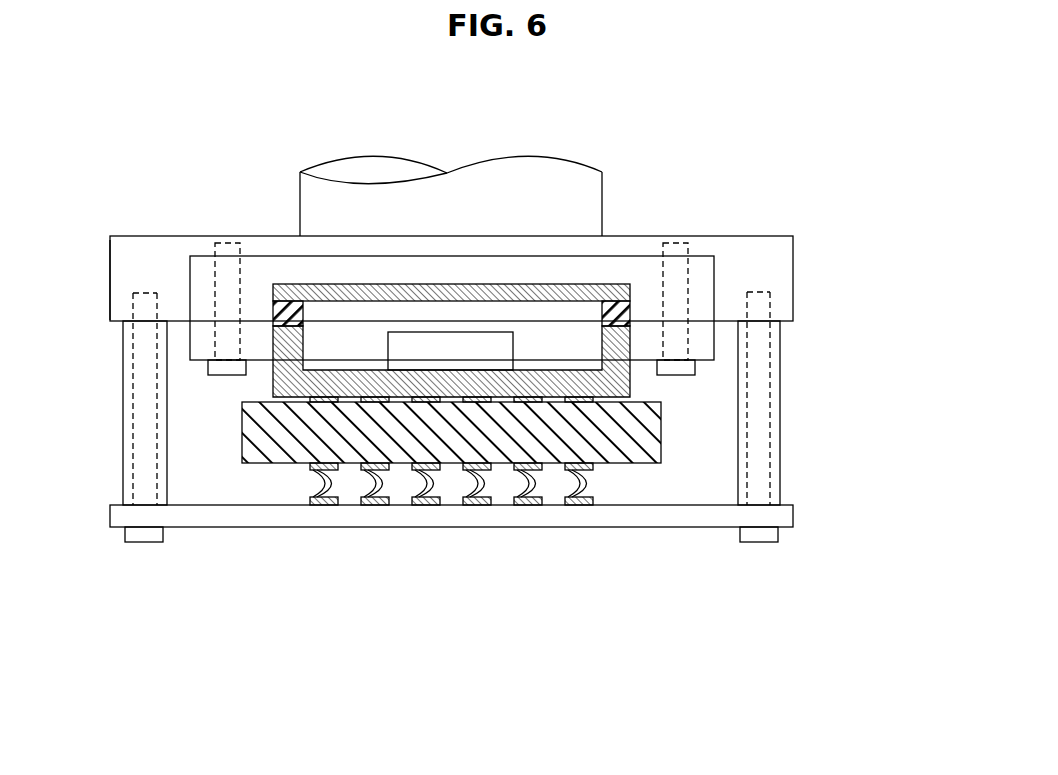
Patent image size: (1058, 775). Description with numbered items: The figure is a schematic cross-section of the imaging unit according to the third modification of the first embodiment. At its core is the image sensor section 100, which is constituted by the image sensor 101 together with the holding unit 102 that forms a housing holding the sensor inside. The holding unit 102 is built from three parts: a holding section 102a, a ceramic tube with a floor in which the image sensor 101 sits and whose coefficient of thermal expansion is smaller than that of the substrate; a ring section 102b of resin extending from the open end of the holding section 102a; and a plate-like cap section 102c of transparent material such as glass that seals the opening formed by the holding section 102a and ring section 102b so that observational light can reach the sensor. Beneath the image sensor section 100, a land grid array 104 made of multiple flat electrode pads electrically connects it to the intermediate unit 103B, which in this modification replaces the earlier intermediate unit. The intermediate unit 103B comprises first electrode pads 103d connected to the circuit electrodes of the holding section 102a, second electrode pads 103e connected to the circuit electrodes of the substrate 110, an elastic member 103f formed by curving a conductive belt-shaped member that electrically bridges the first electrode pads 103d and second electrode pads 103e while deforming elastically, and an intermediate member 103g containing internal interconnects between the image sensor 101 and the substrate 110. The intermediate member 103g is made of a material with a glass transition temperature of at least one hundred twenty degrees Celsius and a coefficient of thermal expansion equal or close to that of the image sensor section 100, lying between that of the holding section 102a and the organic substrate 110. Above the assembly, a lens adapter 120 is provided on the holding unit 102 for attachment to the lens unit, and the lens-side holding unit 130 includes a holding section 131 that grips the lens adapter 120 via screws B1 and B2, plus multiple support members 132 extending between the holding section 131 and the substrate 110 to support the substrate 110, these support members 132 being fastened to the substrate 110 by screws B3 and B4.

The image sensor section 100 is at (608, 250).
The image sensor 101 is at (452, 333).
The holding unit 102 is at (608, 340).
The holding section 102a is at (631, 337).
The ring section 102b is at (631, 313).
The cap section 102c is at (627, 292).
The intermediate unit 103B is at (523, 566).
The first electrode pads 103d is at (600, 467).
The second electrode pads 103e is at (582, 548).
The elastic member 103f is at (594, 483).
The intermediate member 103g is at (662, 432).
The land grid array 104 is at (243, 399).
The substrate 110 is at (790, 514).
The lens adapter 120 is at (707, 275).
The holding unit 130 is at (798, 258).
The holding section 131 is at (108, 276).
The support members 132 is at (123, 457).
The screw B1 is at (207, 370).
The screw B2 is at (698, 371).
The screw B3 is at (144, 538).
The screw B4 is at (757, 539).